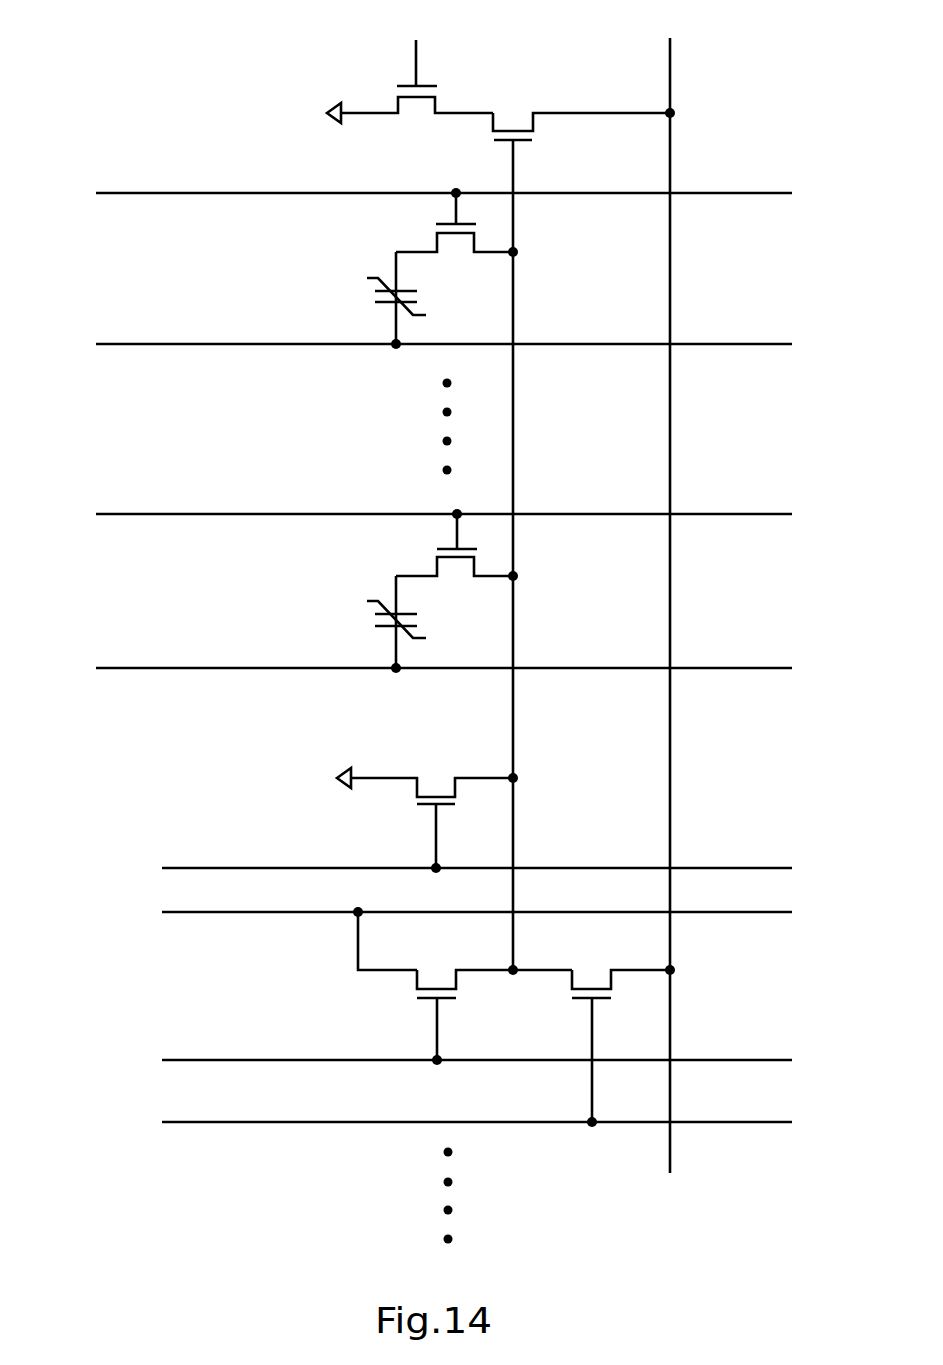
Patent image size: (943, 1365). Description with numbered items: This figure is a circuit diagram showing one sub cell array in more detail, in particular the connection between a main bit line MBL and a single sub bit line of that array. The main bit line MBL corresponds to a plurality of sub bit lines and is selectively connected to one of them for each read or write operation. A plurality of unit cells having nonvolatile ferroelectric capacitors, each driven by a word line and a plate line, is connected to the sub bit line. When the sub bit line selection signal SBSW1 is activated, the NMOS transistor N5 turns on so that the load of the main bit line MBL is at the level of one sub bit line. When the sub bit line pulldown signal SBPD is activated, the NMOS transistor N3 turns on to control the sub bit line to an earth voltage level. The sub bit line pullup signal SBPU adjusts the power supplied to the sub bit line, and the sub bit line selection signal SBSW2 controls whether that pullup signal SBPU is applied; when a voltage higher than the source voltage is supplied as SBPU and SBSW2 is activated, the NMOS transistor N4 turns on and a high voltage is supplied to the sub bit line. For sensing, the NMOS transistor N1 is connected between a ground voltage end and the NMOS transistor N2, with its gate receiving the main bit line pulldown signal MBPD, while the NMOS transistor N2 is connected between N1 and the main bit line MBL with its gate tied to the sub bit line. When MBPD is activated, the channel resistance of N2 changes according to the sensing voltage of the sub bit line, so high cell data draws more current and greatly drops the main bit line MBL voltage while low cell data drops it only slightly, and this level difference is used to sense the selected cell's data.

The NMOS transistor N1 is at (410, 118).
The NMOS transistor N2 is at (581, 109).
The NMOS transistor N3 is at (425, 807).
The NMOS transistor N4 is at (494, 999).
The NMOS transistor N5 is at (621, 1030).
The main bit line MBL is at (669, 589).
The main bit line pulldown signal MBPD is at (418, 46).
The sub bit line pulldown signal SBPD is at (442, 867).
The sub bit line pullup signal SBPU is at (442, 933).
The sub bit line selection signal SBSW1 is at (437, 1120).
The sub bit line selection signal SBSW2 is at (437, 1060).